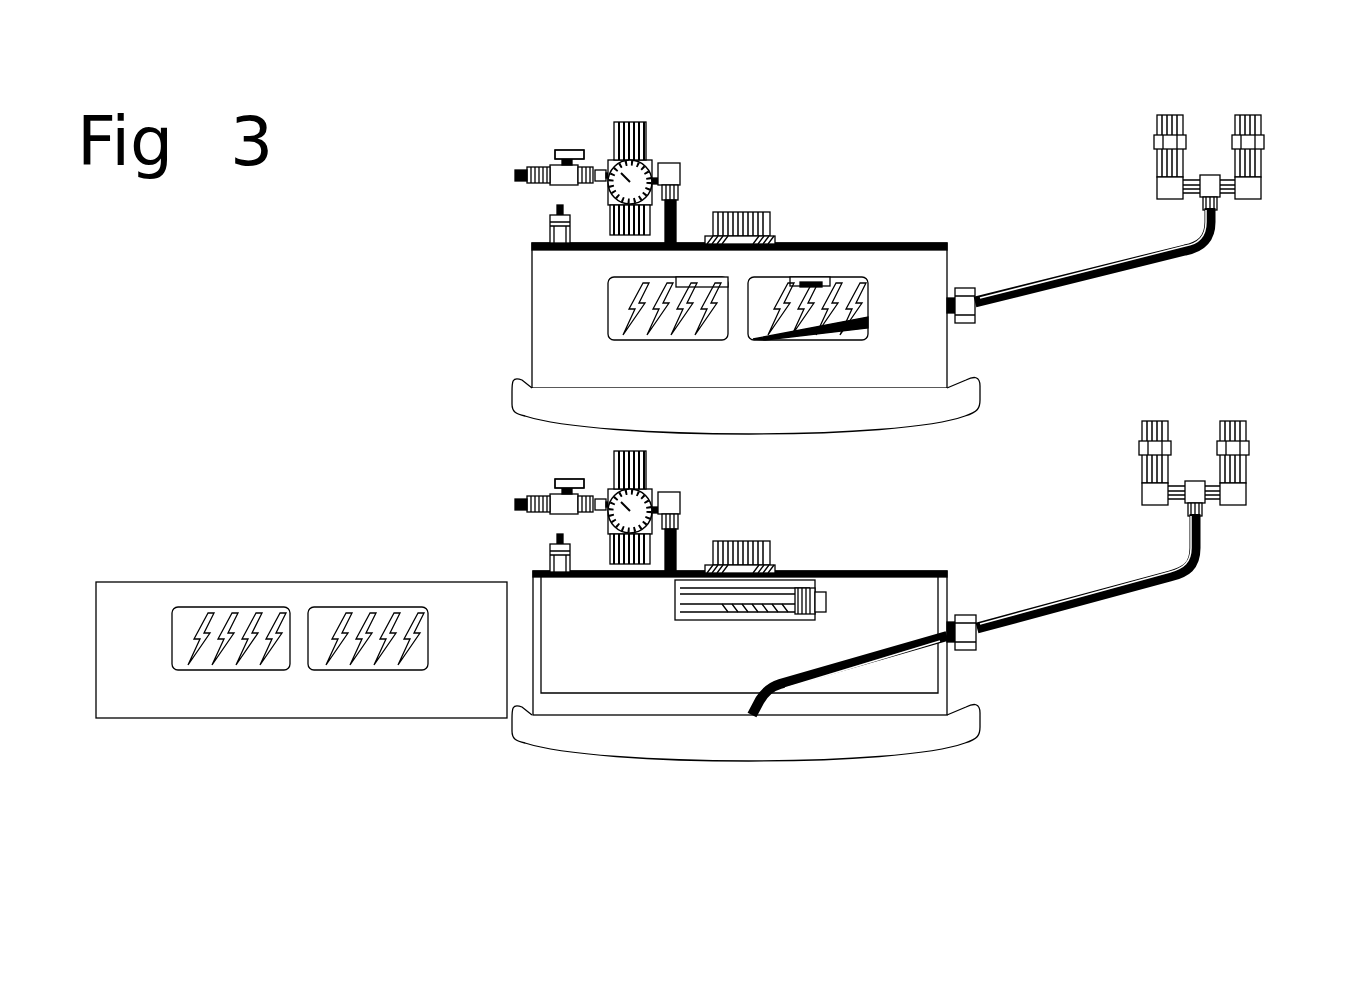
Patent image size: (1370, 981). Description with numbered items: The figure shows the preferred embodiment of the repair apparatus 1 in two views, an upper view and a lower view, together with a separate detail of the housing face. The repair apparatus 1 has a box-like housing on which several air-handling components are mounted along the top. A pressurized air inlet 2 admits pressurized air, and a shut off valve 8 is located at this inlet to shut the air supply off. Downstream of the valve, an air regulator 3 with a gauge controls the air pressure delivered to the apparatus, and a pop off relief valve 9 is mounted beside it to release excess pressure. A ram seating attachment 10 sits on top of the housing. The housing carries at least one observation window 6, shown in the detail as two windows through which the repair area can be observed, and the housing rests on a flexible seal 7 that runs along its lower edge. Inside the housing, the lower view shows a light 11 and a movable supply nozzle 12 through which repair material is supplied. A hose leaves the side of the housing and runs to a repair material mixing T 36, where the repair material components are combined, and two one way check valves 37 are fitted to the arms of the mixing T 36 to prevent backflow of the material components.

The repair apparatus 1 is at (552, 312).
The pressurized air inlet 2 is at (512, 178).
The air regulator 3 is at (660, 162).
The observation window 6 is at (348, 615).
The flexible seal 7 is at (522, 403).
The shut off valve 8 is at (545, 158).
The pop off relief valve 9 is at (543, 230).
The ram seating attachment 10 is at (772, 214).
The light 11 is at (833, 600).
The movable supply nozzle 12 is at (710, 655).
The repair material mixing T 36 is at (1222, 200).
The one way check valves 37 is at (1153, 157).